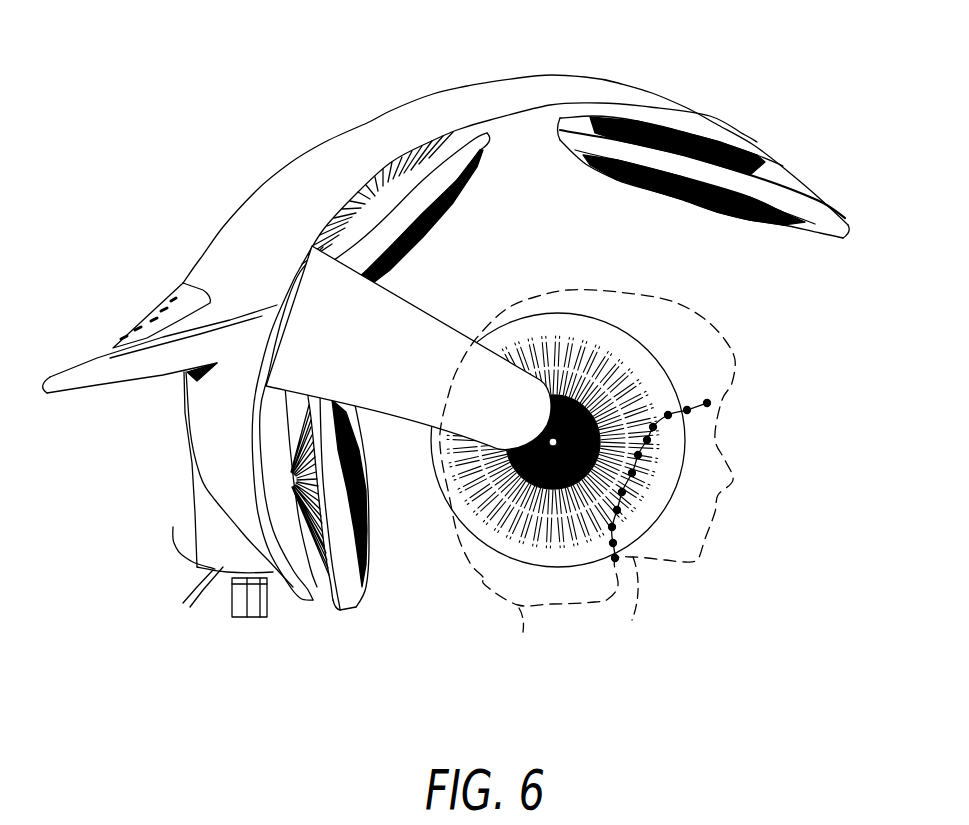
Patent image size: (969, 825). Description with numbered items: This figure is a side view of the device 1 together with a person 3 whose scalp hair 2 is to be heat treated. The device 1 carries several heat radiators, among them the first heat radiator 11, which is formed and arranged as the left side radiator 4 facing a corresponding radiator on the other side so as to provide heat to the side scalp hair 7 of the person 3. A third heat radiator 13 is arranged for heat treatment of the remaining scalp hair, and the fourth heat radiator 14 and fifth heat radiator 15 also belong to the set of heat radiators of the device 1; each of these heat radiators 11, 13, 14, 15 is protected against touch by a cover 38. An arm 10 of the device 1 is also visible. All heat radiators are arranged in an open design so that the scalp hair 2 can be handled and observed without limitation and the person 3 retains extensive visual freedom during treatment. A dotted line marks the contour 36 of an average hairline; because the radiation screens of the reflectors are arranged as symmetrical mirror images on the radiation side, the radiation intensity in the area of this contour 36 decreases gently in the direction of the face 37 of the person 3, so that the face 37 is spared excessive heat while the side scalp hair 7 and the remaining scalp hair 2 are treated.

The device 1 is at (331, 82).
The scalp hair 2 is at (666, 287).
The person 3 is at (782, 390).
The left side radiator 4 is at (558, 514).
The first heat radiator 11 is at (573, 552).
The side scalp hair 7 is at (467, 565).
The arm 10 is at (417, 397).
The third heat radiator 13 is at (487, 140).
The fourth heat radiator 14 is at (578, 148).
The fifth heat radiator 15 is at (357, 600).
The contour 36 is at (727, 401).
The face 37 is at (737, 524).
The cover 38 is at (441, 250).